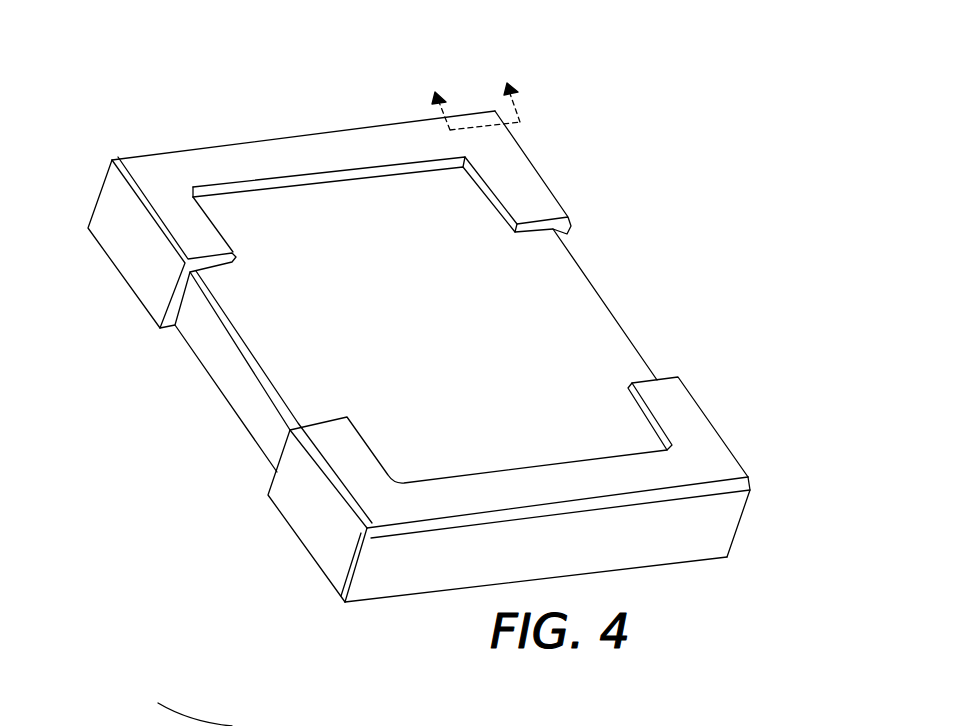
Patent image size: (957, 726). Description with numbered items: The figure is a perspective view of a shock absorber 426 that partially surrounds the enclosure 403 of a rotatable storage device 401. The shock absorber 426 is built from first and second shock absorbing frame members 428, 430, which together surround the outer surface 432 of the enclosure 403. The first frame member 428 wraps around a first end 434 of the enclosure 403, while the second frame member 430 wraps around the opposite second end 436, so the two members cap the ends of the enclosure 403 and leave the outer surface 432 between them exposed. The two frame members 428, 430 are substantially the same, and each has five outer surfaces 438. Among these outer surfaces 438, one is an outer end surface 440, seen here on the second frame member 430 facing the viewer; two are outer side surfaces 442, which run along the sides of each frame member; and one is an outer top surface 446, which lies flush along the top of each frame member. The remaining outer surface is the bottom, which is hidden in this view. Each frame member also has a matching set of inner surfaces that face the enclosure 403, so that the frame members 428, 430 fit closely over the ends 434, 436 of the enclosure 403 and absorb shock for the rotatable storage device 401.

The rotatable storage device 401 is at (585, 267).
The enclosure 403 is at (207, 378).
The shock absorber 426 is at (775, 212).
The first shock absorbing frame member 428 is at (533, 155).
The second shock absorbing frame member 430 is at (700, 403).
The outer surface 432 is at (575, 333).
The first end 434 is at (288, 136).
The second end 436 is at (662, 568).
The outer surfaces 438 is at (386, 140).
The outer end surface 440 is at (718, 523).
The outer side surfaces 442 is at (133, 263).
The outer top surface 446 is at (163, 170).